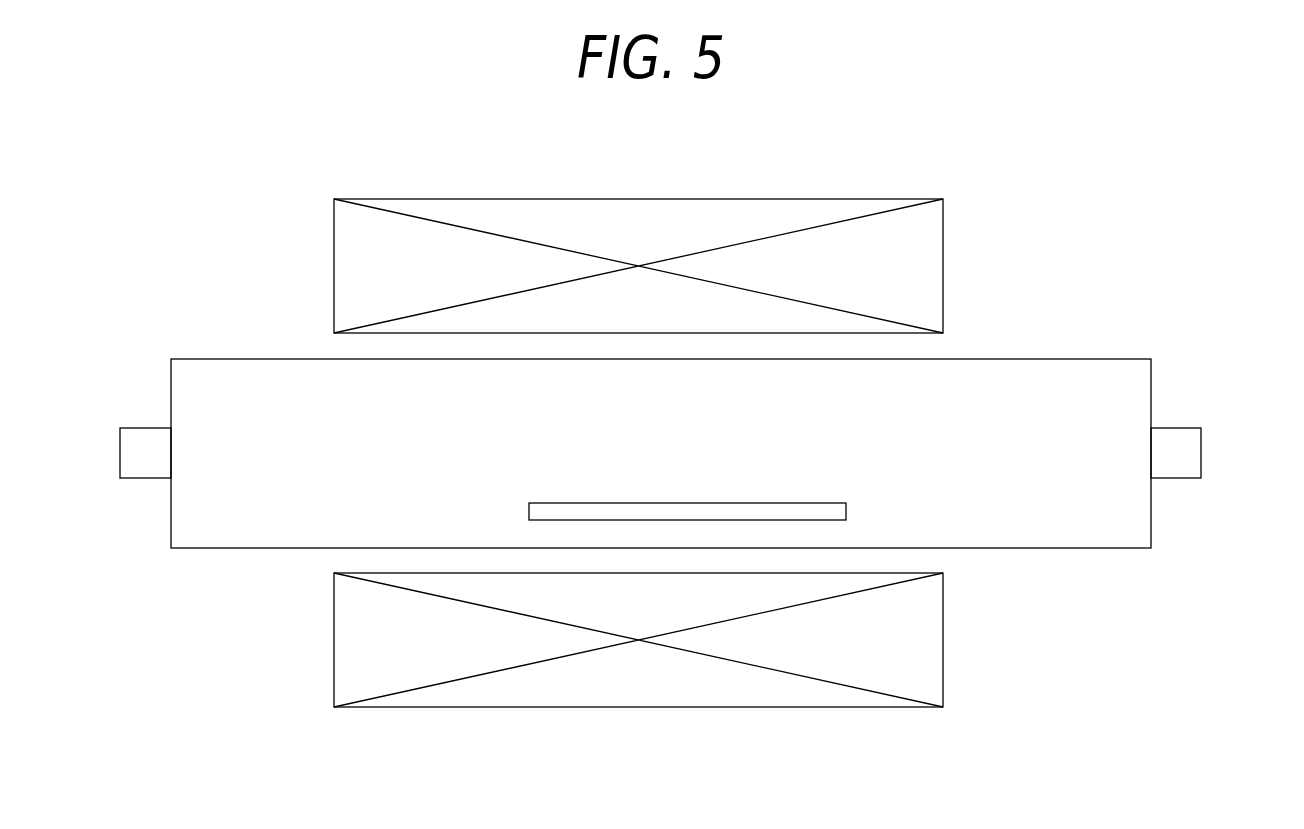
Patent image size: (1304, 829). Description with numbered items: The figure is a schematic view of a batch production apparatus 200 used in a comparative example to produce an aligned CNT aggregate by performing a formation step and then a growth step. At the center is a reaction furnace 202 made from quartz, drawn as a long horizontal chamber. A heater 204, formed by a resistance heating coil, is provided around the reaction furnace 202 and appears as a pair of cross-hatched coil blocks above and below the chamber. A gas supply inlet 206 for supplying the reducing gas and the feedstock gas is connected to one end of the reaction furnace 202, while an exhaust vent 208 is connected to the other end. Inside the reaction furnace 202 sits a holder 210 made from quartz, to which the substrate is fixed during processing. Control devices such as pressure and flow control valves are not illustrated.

The batch production apparatus 200 is at (1038, 228).
The reaction furnace 202 is at (273, 358).
The heater 204 is at (642, 199).
The gas supply inlet 206 is at (143, 428).
The exhaust vent 208 is at (1182, 428).
The holder 210 is at (758, 503).